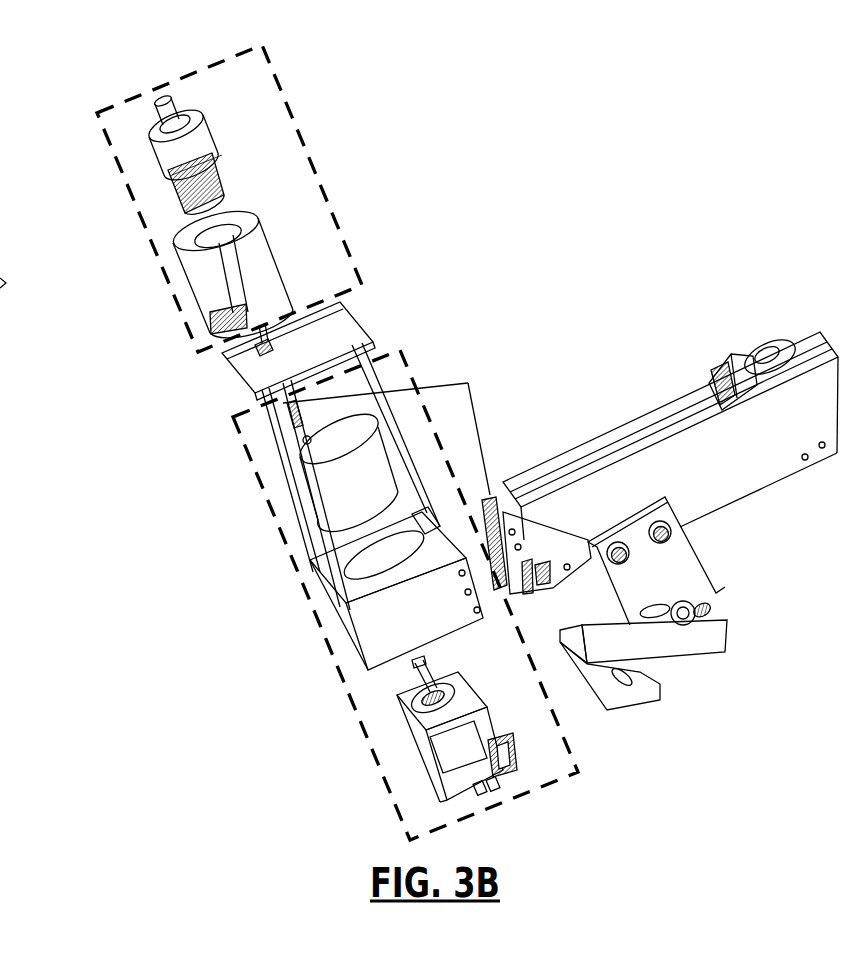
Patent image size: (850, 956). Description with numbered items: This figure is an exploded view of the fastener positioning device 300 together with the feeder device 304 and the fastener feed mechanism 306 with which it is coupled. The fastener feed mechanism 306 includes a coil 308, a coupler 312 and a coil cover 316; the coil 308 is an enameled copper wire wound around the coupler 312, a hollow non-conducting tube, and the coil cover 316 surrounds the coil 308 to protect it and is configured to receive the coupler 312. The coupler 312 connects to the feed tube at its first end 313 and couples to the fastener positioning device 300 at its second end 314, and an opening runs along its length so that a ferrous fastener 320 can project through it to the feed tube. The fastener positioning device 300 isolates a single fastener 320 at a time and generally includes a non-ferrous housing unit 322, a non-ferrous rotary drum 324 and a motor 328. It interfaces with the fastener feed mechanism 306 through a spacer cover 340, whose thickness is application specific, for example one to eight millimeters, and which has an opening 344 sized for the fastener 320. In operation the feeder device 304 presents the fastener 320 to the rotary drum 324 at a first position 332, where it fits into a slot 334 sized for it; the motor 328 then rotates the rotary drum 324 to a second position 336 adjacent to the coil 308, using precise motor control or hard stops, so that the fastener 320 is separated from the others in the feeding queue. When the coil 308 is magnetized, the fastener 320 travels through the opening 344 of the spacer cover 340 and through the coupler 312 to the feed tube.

The fastener positioning device 300 is at (419, 436).
The feeder device 304 is at (820, 332).
The fastener feed mechanism 306 is at (108, 148).
The coil 308 is at (197, 188).
The coupler 312 is at (212, 143).
The first end 313 is at (171, 99).
The second end 314 is at (214, 207).
The coil cover 316 is at (280, 267).
The fastener 320 is at (405, 595).
The non-ferrous housing unit 322 is at (323, 588).
The non-ferrous rotary drum 324 is at (300, 487).
The motor 328 is at (406, 697).
The first position 332 is at (496, 461).
The slot 334 is at (296, 447).
The second position 336 is at (273, 418).
The spacer cover 340 is at (345, 303).
The opening 344 is at (262, 348).